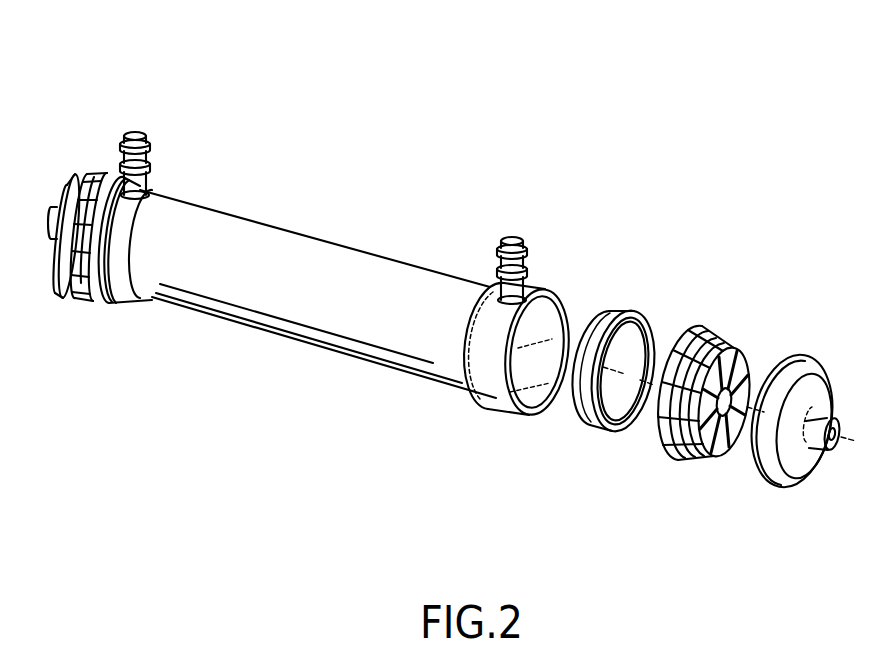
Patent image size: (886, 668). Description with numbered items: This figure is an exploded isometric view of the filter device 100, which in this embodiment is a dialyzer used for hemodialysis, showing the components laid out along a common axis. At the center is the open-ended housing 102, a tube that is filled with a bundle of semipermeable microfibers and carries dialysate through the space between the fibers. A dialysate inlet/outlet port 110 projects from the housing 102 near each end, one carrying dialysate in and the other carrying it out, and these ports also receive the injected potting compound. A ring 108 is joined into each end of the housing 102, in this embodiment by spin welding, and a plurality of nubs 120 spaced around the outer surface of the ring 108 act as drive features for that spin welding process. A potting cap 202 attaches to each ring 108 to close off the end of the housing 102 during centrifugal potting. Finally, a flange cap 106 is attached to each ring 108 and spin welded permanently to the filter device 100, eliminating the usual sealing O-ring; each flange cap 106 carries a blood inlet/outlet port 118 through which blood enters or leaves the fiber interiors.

The filter device 100 is at (321, 113).
The housing 102 is at (433, 270).
The flange cap 106 is at (95, 190).
The ring 108 is at (112, 188).
The dialysate inlet/outlet port 110 is at (136, 133).
The blood inlet/outlet port 118 is at (829, 416).
The nub 120 is at (87, 207).
The potting cap 202 is at (727, 343).